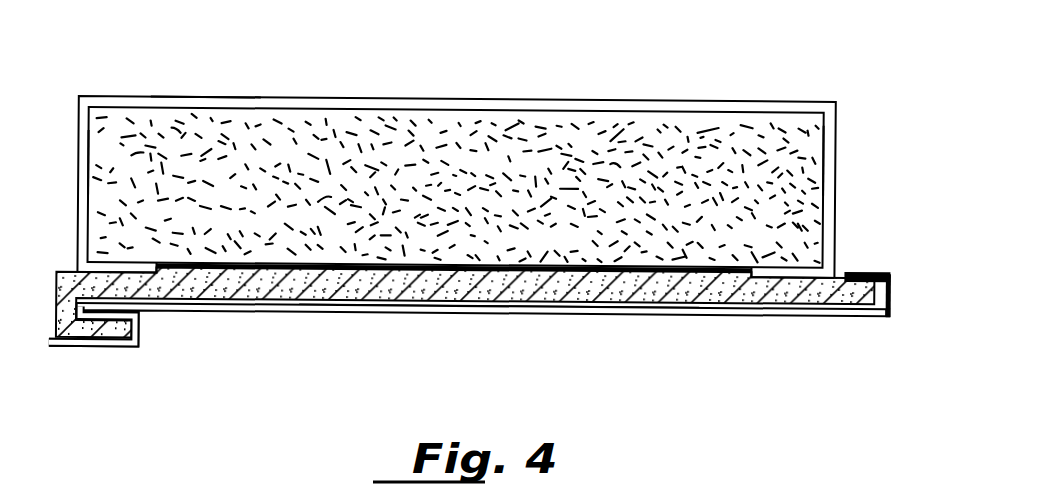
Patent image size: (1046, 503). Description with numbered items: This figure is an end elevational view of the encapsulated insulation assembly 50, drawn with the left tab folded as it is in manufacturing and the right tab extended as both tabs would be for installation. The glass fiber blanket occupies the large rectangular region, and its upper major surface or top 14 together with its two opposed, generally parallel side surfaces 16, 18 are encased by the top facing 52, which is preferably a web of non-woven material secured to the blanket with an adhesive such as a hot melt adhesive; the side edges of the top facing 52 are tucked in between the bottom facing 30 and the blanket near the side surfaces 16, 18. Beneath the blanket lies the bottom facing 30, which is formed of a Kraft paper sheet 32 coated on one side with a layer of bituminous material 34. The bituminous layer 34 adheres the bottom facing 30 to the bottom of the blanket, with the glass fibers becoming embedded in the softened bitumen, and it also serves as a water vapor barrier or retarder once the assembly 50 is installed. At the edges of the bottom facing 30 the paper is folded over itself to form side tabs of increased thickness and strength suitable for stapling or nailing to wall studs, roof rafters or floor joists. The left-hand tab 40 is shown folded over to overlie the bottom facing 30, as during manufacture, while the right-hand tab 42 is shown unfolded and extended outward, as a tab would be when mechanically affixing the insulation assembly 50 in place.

The upper major surface or top 14 is at (345, 96).
The side surface 16 is at (822, 143).
The side surface 18 is at (90, 158).
The bottom facing 30 is at (443, 305).
The Kraft paper sheet 32 is at (498, 305).
The bituminous coating layer 34 is at (345, 278).
The left-hand tab 40 is at (125, 329).
The right-hand tab 42 is at (853, 306).
The encapsulated insulation assembly 50 is at (848, 159).
The top facing 52 is at (200, 96).